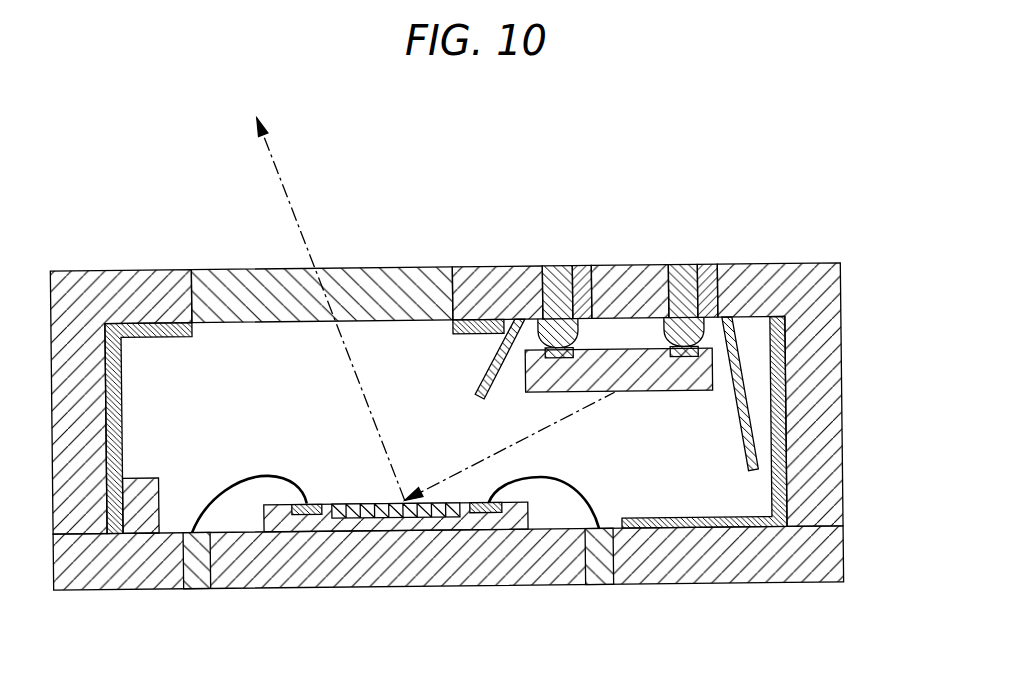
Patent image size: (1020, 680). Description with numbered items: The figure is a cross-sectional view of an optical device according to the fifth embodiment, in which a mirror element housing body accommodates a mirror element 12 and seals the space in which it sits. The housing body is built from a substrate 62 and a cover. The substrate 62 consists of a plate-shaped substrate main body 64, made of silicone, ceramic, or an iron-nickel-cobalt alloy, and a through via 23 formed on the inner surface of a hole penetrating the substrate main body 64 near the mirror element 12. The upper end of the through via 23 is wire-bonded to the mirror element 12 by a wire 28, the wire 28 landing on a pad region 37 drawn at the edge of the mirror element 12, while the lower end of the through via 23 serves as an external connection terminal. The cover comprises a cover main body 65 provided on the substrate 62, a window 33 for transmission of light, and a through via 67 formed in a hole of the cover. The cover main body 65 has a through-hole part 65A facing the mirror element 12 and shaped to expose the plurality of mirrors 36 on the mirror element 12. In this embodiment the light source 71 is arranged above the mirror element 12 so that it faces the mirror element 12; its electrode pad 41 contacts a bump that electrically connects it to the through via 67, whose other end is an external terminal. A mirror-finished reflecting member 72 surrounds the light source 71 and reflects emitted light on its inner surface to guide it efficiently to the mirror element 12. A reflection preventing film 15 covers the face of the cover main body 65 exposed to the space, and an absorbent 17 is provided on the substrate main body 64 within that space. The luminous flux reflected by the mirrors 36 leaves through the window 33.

The mirror element 12 is at (324, 519).
The reflection preventing film 15 is at (168, 334).
The absorbent 17 is at (141, 514).
The through via 23 is at (193, 578).
The wire 28 is at (552, 506).
The window for transmission of light 33 is at (378, 291).
The mirrors 36 is at (404, 511).
The electrode pad 37 is at (305, 508).
The electrode pad 41 is at (584, 299).
The substrate 62 is at (486, 589).
The substrate main body 64 is at (63, 584).
The cover main body 65 is at (112, 288).
The through-hole part 65A is at (452, 292).
The through via 67 is at (558, 284).
The light source 71 is at (632, 351).
The reflecting member 72 is at (480, 398).